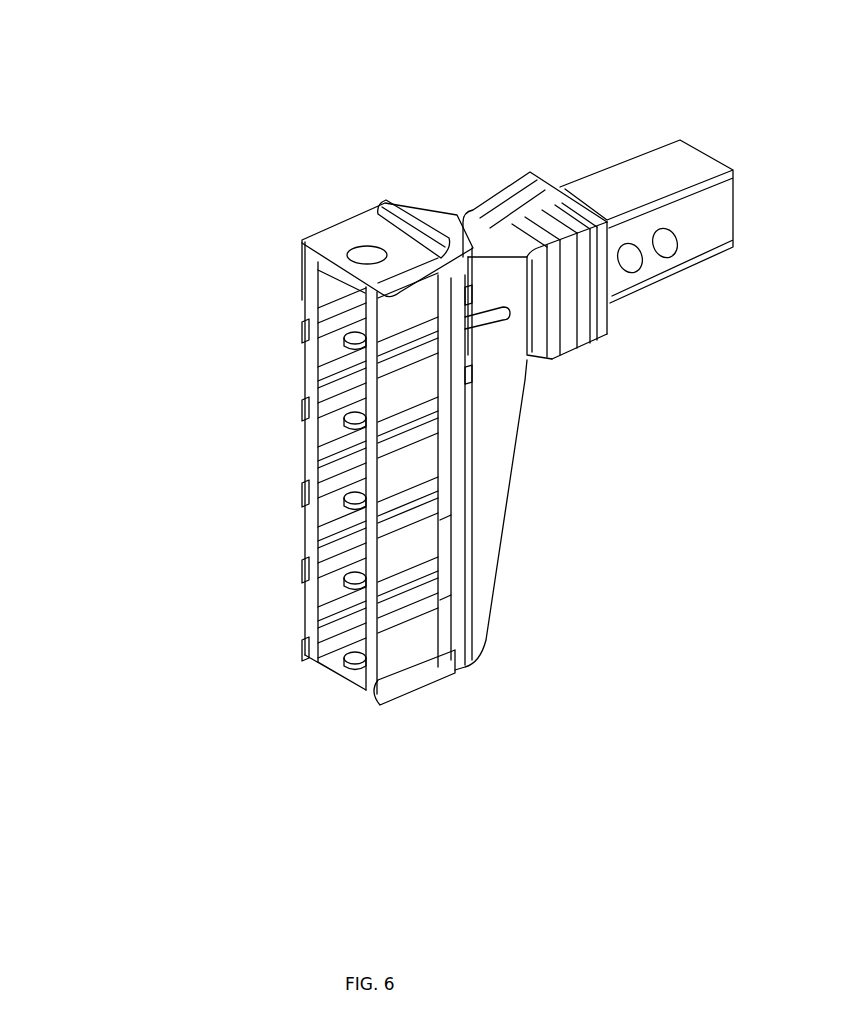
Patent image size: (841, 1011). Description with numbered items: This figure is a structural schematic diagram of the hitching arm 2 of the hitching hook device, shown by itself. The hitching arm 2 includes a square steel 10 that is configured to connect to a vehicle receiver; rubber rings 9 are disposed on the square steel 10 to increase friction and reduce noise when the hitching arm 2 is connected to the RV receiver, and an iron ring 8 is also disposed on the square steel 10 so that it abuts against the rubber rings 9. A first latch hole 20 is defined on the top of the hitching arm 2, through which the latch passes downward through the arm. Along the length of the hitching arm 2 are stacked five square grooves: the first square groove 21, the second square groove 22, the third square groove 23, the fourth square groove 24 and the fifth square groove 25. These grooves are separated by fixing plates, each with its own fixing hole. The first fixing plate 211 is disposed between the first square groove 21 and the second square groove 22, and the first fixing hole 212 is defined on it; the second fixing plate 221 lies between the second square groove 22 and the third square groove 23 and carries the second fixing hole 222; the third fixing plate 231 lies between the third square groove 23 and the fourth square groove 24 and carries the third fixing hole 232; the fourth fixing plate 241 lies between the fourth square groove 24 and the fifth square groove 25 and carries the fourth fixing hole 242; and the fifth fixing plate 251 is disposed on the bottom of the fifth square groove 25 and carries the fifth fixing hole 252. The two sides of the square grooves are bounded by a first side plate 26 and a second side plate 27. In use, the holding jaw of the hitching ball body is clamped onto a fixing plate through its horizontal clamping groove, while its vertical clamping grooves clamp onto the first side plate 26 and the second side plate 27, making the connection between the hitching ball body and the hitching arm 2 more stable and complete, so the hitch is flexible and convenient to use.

The hitching arm 2 is at (378, 240).
The iron ring 8 is at (463, 215).
The rubber ring 9 is at (533, 192).
The square steel 10 is at (628, 165).
The first latch hole 20 is at (367, 258).
The first square groove 21 is at (318, 300).
The first fixing plate 211 is at (303, 320).
The first fixing hole 212 is at (388, 355).
The second square groove 22 is at (330, 368).
The second fixing plate 221 is at (303, 398).
The second fixing hole 222 is at (395, 447).
The third square groove 23 is at (330, 439).
The third fixing plate 231 is at (303, 488).
The third fixing hole 232 is at (455, 655).
The fourth square groove 24 is at (327, 557).
The fourth fixing plate 241 is at (303, 568).
The fourth fixing hole 242 is at (370, 692).
The fifth square groove 25 is at (325, 629).
The fifth fixing plate 251 is at (303, 648).
The fifth fixing hole 252 is at (360, 692).
The first side plate 26 is at (400, 481).
The second side plate 27 is at (392, 390).